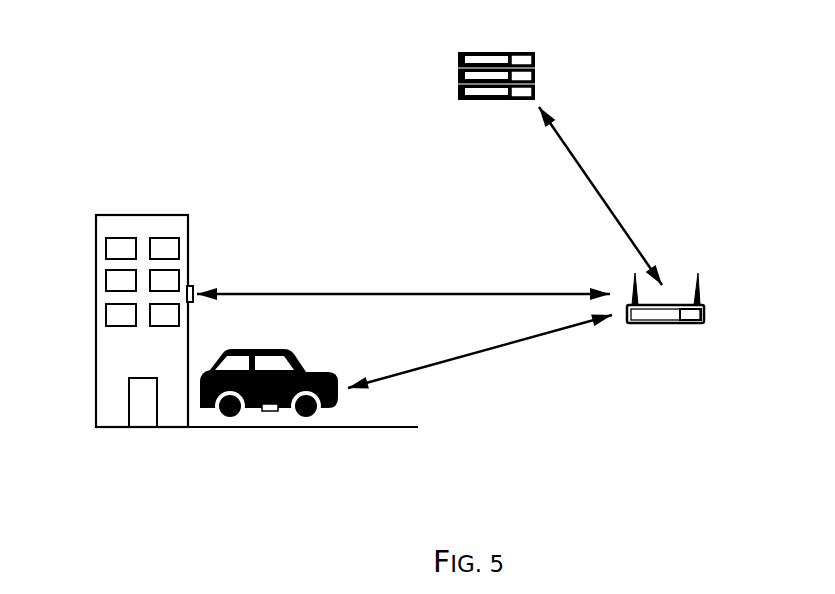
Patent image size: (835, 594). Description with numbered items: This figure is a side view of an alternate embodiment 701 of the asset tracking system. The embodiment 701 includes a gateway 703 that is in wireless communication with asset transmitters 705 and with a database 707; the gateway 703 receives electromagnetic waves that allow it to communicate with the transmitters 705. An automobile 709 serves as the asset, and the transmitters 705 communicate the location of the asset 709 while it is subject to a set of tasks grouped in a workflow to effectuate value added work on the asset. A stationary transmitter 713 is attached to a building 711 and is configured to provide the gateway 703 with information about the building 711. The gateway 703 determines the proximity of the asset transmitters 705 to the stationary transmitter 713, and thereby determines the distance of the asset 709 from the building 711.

The embodiment 701 is at (104, 108).
The gateway 703 is at (704, 312).
The asset transmitter 705 is at (270, 413).
The database 707 is at (528, 52).
The asset (automobile) 709 is at (338, 397).
The building 711 is at (188, 240).
The stationary transmitter 713 is at (193, 288).